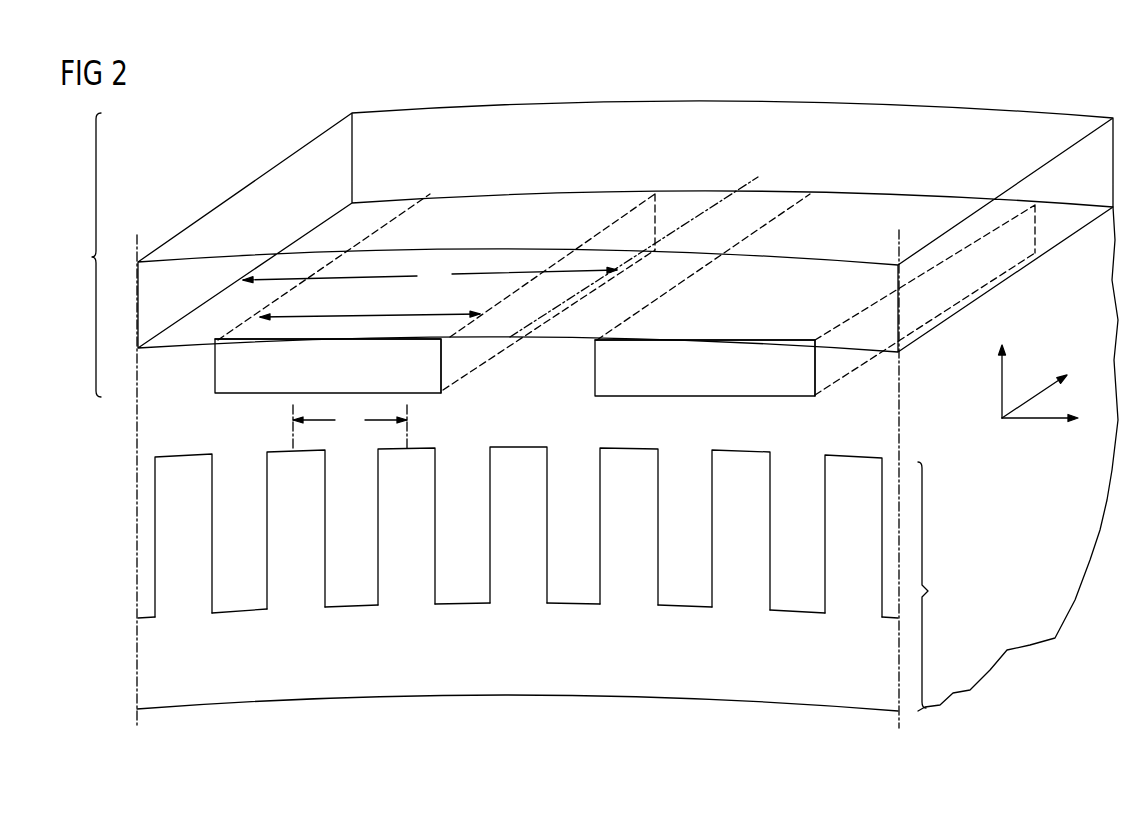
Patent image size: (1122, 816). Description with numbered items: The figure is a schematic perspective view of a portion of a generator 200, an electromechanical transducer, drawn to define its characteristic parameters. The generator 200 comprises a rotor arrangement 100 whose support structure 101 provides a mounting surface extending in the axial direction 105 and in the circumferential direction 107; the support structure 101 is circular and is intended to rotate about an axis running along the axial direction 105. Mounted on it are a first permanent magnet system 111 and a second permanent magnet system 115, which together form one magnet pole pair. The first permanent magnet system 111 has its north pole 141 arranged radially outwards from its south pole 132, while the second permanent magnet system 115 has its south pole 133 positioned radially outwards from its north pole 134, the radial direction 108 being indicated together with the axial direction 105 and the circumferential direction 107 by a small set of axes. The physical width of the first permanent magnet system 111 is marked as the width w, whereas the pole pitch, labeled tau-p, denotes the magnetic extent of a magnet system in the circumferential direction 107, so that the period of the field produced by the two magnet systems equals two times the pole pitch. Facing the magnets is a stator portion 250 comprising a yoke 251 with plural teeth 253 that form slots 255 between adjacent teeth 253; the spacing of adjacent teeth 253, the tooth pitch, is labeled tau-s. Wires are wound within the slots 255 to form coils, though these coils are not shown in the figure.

The generator 200 is at (248, 120).
The rotor arrangement 100 is at (582, 249).
The support structure 101 is at (207, 218).
The first permanent magnet system 111 is at (540, 203).
The second permanent magnet system 115 is at (857, 203).
The south pole 132 is at (320, 380).
The north pole 141 is at (338, 354).
The north pole 134 is at (700, 386).
The south pole 133 is at (716, 357).
The stator portion 250 is at (550, 491).
The yoke 251 is at (695, 694).
The teeth 253 is at (280, 456).
The slots 255 is at (455, 577).
The axial direction 105 is at (1031, 397).
The circumferential direction 107 is at (1037, 428).
The radial direction 108 is at (1002, 386).